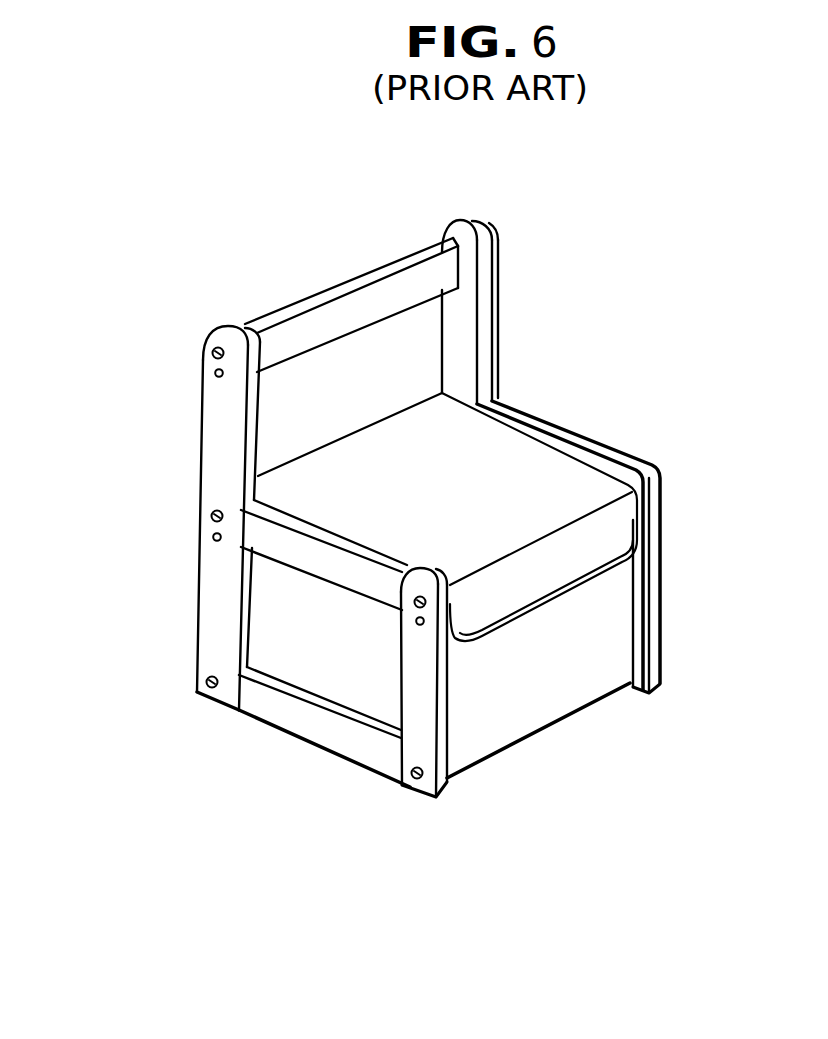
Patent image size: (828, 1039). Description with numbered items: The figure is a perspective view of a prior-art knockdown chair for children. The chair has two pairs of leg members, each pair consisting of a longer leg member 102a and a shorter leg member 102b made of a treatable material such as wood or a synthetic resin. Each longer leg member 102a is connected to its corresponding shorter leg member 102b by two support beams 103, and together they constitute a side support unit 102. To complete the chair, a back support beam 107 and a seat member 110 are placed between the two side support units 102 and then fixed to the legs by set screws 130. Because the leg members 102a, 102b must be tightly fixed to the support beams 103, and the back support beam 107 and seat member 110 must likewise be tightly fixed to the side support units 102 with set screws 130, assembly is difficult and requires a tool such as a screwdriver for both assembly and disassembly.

The side support unit 102 is at (356, 553).
The longer leg member 102a is at (215, 597).
The shorter leg member 102b is at (417, 703).
The support beam 103 is at (332, 562).
The back support beam 107 is at (350, 305).
The seat member 110 is at (543, 480).
The set screw 130 is at (210, 353).